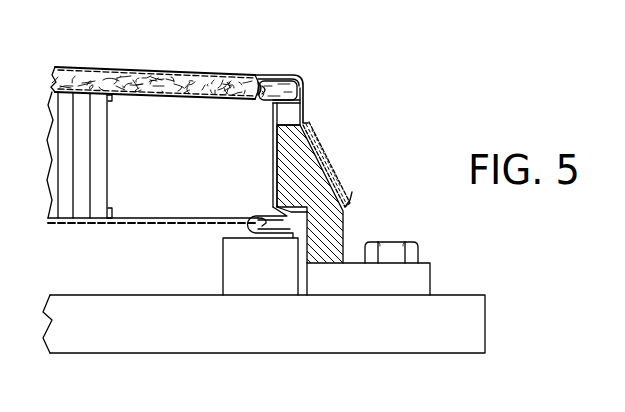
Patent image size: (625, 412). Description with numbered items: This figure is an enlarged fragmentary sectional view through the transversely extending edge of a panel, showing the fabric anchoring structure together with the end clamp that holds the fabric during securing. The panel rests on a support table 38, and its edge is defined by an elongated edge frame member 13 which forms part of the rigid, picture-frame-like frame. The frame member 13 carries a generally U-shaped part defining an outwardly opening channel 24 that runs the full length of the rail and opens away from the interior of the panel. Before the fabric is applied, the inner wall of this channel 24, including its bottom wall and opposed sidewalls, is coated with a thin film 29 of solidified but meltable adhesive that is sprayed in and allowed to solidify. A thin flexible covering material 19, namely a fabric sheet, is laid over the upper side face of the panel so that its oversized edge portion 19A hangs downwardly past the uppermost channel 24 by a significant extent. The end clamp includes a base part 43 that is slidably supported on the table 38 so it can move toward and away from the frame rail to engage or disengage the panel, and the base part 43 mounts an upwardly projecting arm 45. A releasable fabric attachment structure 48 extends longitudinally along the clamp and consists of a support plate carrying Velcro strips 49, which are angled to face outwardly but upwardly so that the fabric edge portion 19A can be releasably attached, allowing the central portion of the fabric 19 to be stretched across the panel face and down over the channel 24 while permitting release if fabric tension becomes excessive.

The thin flexible covering material 19 is at (173, 66).
The thin film of solidified but meltable adhesive 29 is at (268, 88).
The outwardly opening channel 24 is at (288, 93).
The edge portion of the fabric 19A is at (306, 114).
The releasable fabric attachment structure 48 is at (328, 152).
The Velcro strip 49 is at (334, 172).
The upwardly projecting arm 45 is at (342, 222).
The base part of the clamp 43 is at (420, 278).
The edge frame member 13 is at (157, 197).
The support table 38 is at (292, 342).